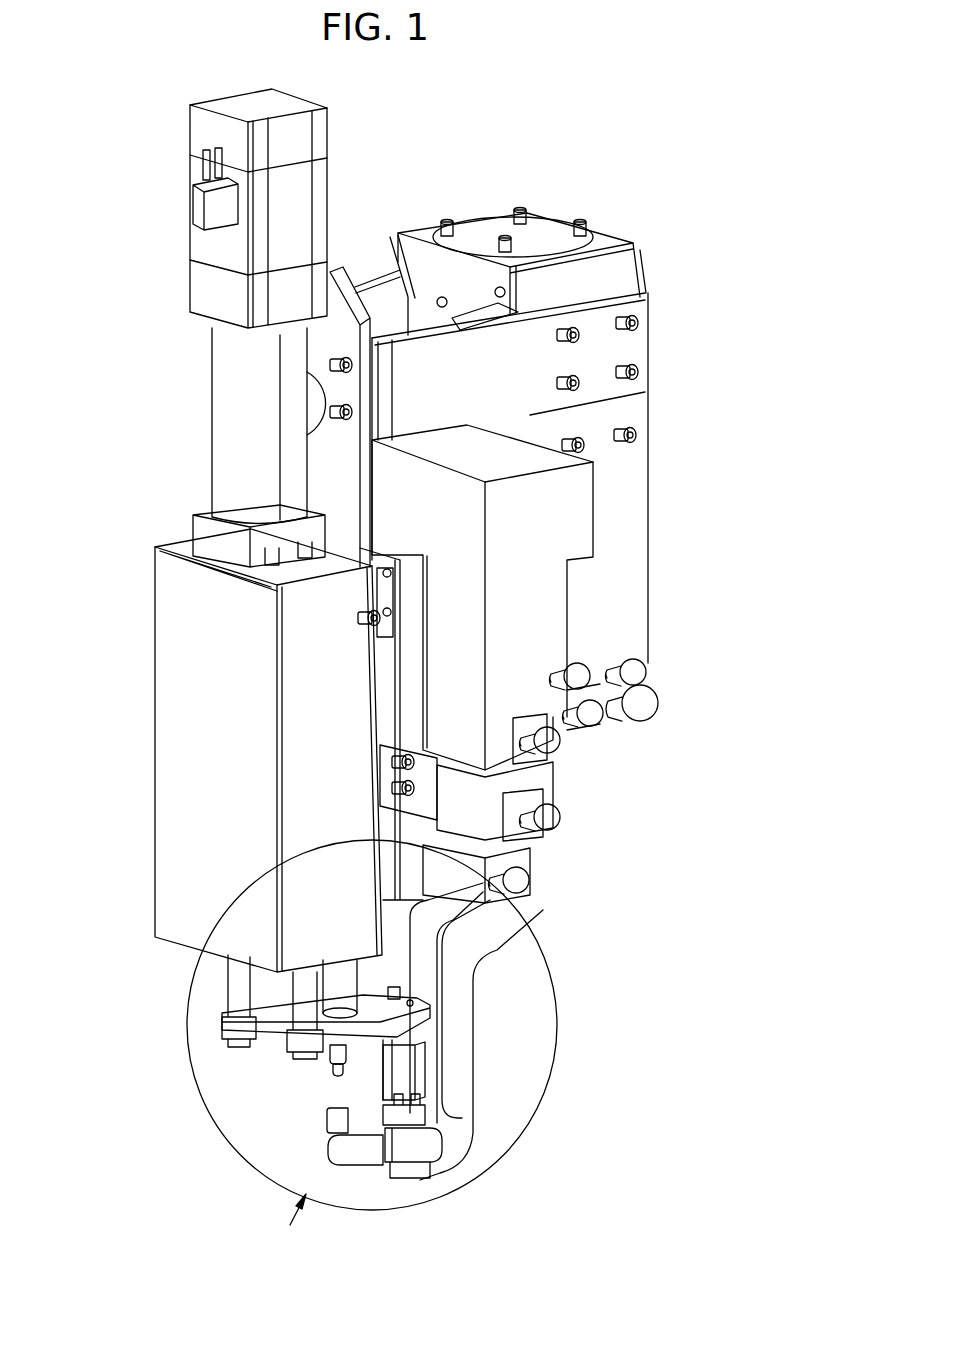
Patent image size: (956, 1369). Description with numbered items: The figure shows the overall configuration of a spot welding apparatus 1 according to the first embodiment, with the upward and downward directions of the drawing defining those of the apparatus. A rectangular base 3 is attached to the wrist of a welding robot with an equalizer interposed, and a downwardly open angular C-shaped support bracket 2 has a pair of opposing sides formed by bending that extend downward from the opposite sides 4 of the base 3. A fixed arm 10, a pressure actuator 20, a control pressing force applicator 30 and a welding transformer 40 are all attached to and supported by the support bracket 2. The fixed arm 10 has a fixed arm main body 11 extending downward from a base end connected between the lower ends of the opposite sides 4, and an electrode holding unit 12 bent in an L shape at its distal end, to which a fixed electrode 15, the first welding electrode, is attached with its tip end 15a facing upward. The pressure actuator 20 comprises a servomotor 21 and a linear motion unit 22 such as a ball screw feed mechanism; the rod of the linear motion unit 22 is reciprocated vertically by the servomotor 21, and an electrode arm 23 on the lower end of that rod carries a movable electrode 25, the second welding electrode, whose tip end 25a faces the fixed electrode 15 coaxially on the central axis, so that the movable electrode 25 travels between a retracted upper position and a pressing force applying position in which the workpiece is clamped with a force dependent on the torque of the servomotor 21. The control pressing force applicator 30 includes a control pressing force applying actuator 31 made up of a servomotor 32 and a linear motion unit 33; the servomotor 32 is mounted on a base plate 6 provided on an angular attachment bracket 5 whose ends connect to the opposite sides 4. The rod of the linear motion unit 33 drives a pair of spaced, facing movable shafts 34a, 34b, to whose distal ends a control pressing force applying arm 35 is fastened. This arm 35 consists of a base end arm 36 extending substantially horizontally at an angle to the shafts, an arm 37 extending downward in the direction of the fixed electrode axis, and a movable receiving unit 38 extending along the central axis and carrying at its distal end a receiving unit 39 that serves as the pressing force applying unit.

The spot welding apparatus 1 is at (150, 199).
The support bracket 2 is at (452, 142).
The base 3 is at (492, 233).
The opposite sides 4 is at (432, 267).
The attachment bracket 5 is at (385, 297).
The base plate 6 is at (335, 308).
The fixed arm 10 is at (523, 898).
The fixed arm main body 11 is at (465, 998).
The electrode holding unit 12 is at (407, 1153).
The fixed electrode 15 is at (365, 1160).
The tip end 15a is at (338, 1142).
The pressure actuator 20 is at (605, 499).
The servomotor 21 is at (548, 587).
The linear motion unit 22 is at (410, 633).
The electrode arm 23 is at (345, 978).
The movable electrode 25 is at (337, 1052).
The tip end 25a is at (340, 1078).
The control pressing force applicator 30 is at (146, 588).
The control pressing force applying actuator 31 is at (100, 315).
The servomotor 32 is at (207, 303).
The linear motion unit 33 is at (208, 538).
The movable shaft 34a is at (238, 977).
The movable shaft 34b is at (305, 1008).
The control pressing force applying arm 35 is at (620, 1010).
The base end arm 36 is at (423, 1015).
The arm 37 is at (403, 1067).
The movable receiving unit 38 is at (413, 1123).
The receiving unit 39 is at (368, 1125).
The welding transformer 40 is at (493, 313).